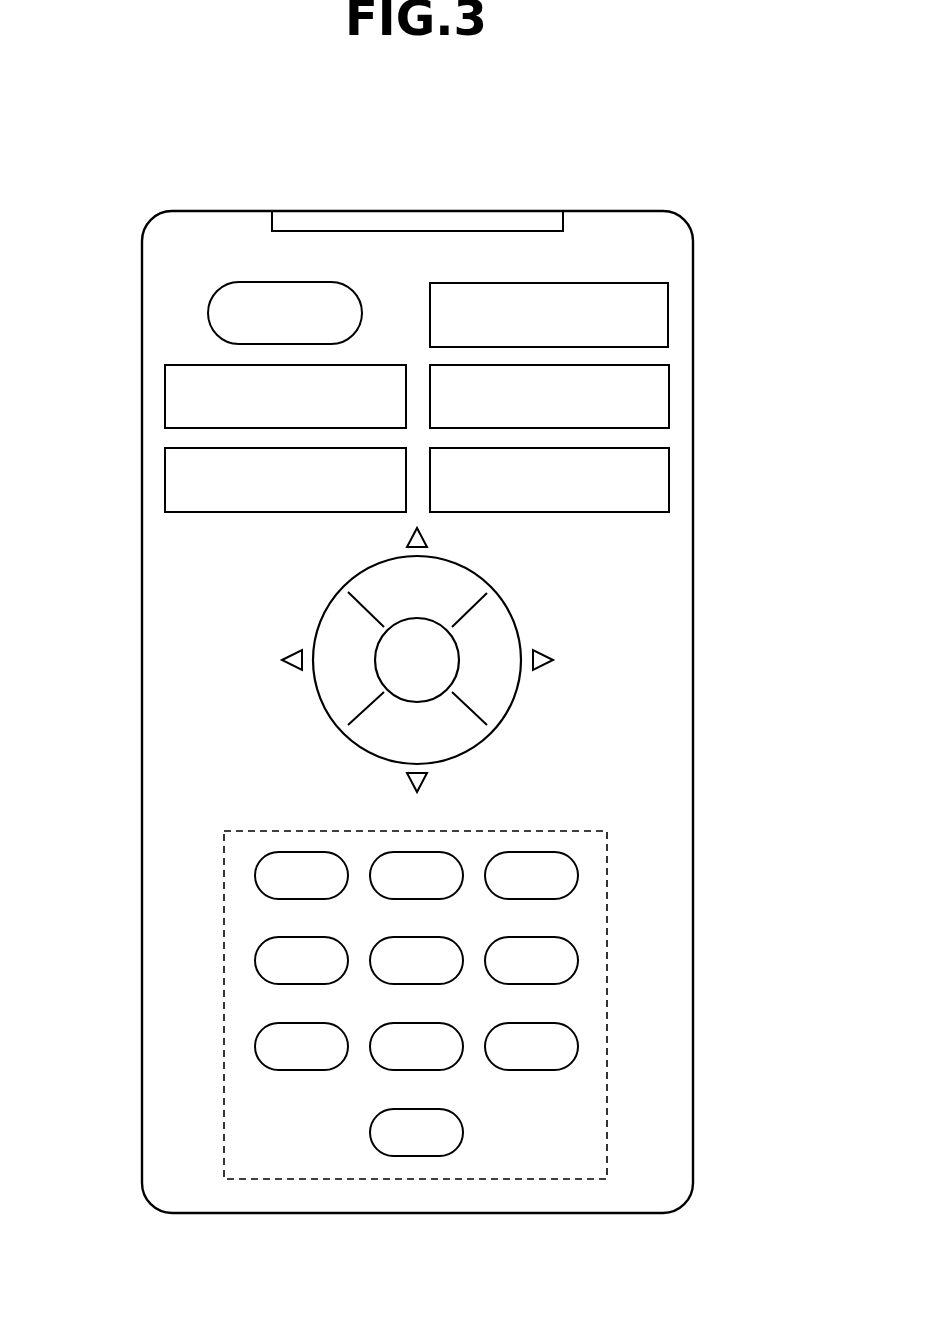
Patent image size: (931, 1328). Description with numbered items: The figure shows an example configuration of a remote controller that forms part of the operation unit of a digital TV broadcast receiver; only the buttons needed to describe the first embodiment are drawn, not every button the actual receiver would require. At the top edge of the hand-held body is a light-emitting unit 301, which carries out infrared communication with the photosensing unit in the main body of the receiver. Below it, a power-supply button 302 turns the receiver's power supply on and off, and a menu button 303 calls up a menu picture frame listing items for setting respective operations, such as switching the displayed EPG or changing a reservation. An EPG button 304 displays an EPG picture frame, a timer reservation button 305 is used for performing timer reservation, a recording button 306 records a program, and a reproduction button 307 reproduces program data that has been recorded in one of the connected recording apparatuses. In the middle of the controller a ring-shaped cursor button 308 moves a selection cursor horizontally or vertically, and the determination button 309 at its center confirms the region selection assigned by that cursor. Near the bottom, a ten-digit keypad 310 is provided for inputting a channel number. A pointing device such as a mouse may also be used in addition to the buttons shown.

The light-emitting unit 301 is at (496, 222).
The power-supply button 302 is at (349, 286).
The menu button 303 is at (668, 315).
The EPG button 304 is at (165, 400).
The timer reservation button 305 is at (669, 397).
The recording button 306 is at (165, 480).
The reproduction button 307 is at (669, 480).
The cursor button 308 is at (331, 694).
The determination button 309 is at (430, 636).
The ten-digit keypad 310 is at (493, 847).